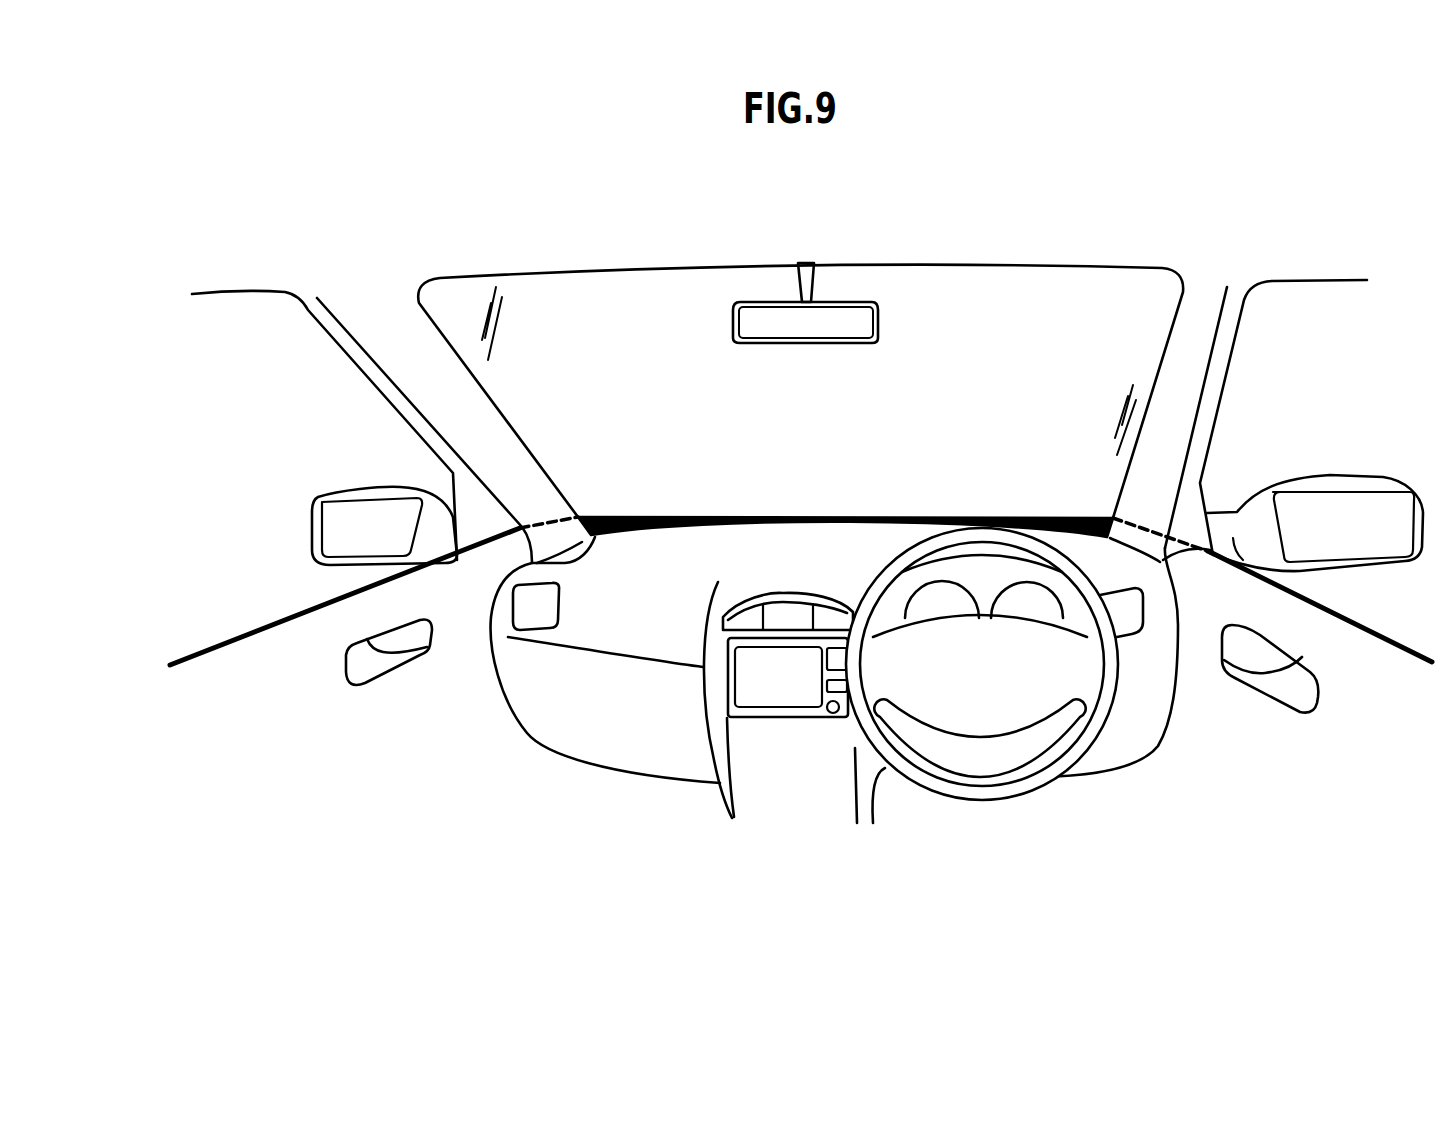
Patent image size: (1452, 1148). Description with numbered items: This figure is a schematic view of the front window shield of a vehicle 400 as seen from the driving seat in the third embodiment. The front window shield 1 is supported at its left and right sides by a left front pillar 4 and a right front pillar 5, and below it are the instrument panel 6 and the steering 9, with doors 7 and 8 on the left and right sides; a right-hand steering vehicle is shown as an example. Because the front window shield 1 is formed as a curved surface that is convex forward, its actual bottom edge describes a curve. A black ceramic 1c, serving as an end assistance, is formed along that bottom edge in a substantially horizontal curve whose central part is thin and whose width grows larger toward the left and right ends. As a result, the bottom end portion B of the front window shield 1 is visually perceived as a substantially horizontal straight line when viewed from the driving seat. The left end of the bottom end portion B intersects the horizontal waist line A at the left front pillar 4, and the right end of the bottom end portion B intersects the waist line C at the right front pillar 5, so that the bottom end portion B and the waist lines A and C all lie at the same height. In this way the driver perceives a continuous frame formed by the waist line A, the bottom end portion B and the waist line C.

The vehicle 400 is at (1128, 233).
The front window shield 1 is at (667, 332).
The black ceramic 1c is at (522, 565).
The left front pillar 4 is at (442, 382).
The right front pillar 5 is at (1182, 378).
The instrument panel 6 is at (618, 597).
The door 7 is at (250, 677).
The door 8 is at (1347, 667).
The steering 9 is at (1030, 790).
The waist line A is at (274, 617).
The bottom end portion B is at (677, 517).
The waist line C is at (1393, 639).